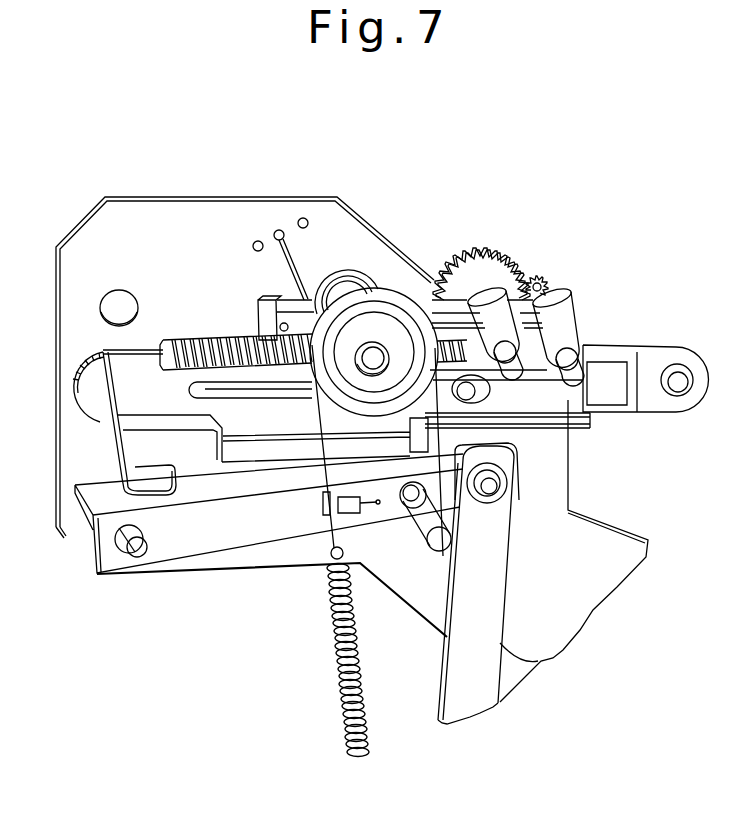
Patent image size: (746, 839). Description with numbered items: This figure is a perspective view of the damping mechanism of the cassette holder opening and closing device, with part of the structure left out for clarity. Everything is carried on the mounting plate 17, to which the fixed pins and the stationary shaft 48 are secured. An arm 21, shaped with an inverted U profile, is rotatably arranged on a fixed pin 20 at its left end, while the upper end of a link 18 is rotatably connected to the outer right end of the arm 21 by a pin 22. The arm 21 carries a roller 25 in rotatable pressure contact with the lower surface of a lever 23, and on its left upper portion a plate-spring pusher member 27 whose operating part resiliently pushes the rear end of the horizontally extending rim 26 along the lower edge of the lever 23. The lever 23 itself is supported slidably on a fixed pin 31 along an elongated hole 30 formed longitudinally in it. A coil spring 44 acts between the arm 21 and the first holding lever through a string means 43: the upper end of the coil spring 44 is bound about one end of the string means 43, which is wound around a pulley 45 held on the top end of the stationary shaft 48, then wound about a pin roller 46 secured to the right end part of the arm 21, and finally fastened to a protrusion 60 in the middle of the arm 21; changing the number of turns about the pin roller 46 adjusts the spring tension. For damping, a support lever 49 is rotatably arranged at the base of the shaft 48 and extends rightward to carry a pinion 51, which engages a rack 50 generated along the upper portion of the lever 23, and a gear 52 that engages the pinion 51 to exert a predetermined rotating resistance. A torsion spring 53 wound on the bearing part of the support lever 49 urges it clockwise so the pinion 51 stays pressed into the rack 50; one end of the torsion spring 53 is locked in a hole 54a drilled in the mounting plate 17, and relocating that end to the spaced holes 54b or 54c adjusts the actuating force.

The mounting plate 17 is at (238, 196).
The link 18 is at (543, 661).
The fixed pin 20 is at (136, 552).
The arm 21 is at (284, 545).
The pin 22 is at (491, 487).
The lever 23 is at (92, 385).
The roller 25 is at (495, 443).
The horizontally extending rim 26 is at (181, 440).
The pusher member 27 is at (115, 446).
The elongated hole 30 is at (210, 388).
The fixed pin 31 is at (480, 392).
The string means 43 is at (317, 432).
The coil spring 44 is at (340, 680).
The pulley 45 is at (388, 291).
The pin roller 46 is at (437, 552).
The stationary shaft 48 is at (379, 362).
The support lever 49 is at (262, 298).
The rack 50 is at (208, 338).
The pinion 51 is at (478, 247).
The gear 52 is at (541, 277).
The torsion spring 53 is at (292, 262).
The hole 54a is at (278, 230).
The hole 54b is at (304, 218).
The hole 54c is at (253, 244).
The protrusion 60 is at (352, 514).